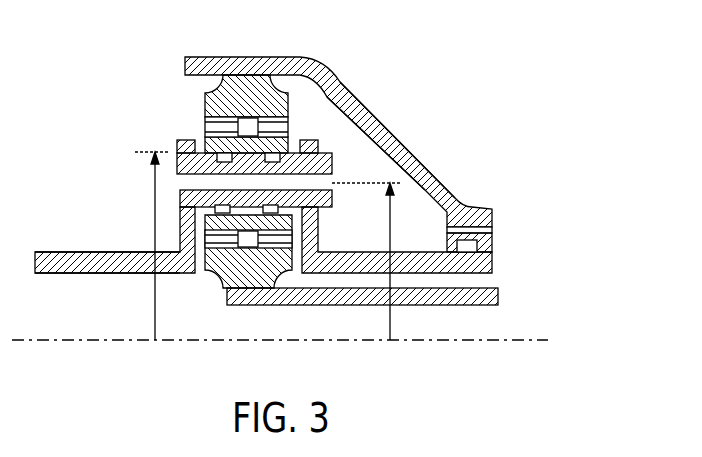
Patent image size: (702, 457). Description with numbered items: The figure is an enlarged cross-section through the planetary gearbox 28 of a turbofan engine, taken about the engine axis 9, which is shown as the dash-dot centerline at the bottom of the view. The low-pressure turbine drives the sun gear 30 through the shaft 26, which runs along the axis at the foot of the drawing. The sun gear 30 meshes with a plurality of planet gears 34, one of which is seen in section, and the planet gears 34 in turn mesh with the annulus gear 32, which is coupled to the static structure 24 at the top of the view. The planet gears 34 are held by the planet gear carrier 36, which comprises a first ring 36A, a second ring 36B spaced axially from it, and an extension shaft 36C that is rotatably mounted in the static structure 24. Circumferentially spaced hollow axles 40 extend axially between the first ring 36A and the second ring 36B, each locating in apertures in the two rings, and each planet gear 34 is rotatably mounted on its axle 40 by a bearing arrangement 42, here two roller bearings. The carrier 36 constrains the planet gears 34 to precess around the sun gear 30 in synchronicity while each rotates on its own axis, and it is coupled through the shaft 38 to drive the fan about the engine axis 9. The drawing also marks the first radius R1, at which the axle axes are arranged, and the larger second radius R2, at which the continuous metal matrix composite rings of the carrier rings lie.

The engine axis 9 is at (518, 338).
The static structure 24 is at (285, 62).
The shaft 26 is at (402, 300).
The gearbox 28 is at (150, 312).
The sun gear 30 is at (227, 250).
The annulus gear 32 is at (238, 97).
The planet gears 34 is at (274, 147).
The planet gear carrier 36 is at (318, 243).
The first ring 36A is at (318, 232).
The second ring 36B is at (180, 222).
The extension shaft 36C is at (427, 252).
The shaft 38 is at (73, 273).
The axles 40 is at (178, 163).
The bearing arrangement 42 is at (217, 209).
The first radius R1 is at (378, 261).
The second radius R2 is at (142, 246).